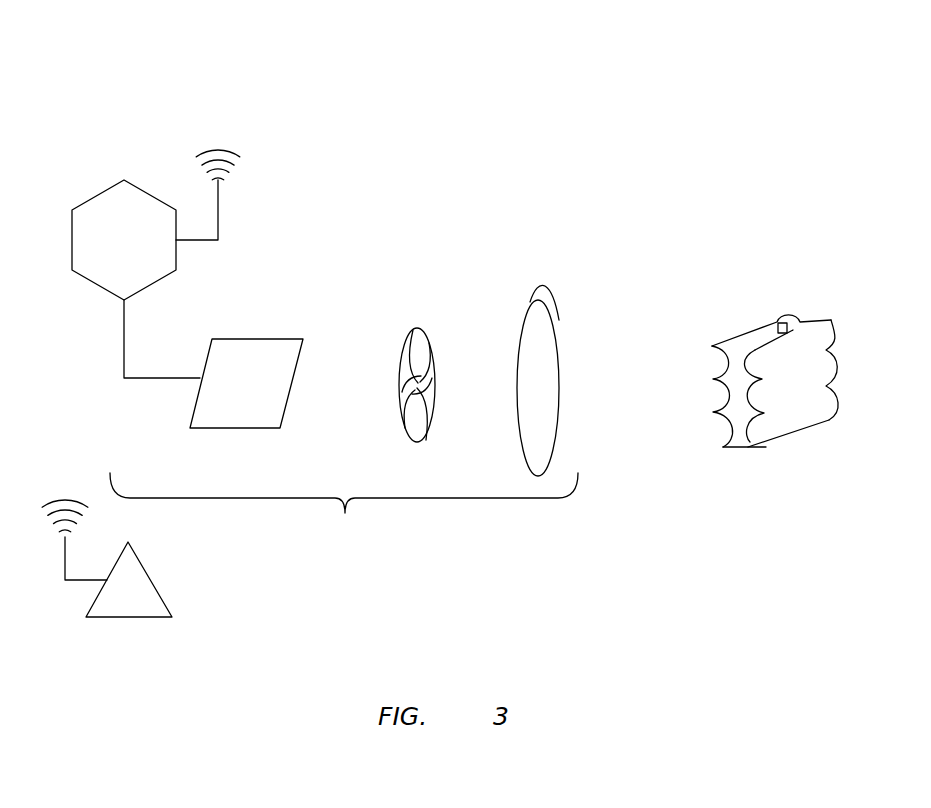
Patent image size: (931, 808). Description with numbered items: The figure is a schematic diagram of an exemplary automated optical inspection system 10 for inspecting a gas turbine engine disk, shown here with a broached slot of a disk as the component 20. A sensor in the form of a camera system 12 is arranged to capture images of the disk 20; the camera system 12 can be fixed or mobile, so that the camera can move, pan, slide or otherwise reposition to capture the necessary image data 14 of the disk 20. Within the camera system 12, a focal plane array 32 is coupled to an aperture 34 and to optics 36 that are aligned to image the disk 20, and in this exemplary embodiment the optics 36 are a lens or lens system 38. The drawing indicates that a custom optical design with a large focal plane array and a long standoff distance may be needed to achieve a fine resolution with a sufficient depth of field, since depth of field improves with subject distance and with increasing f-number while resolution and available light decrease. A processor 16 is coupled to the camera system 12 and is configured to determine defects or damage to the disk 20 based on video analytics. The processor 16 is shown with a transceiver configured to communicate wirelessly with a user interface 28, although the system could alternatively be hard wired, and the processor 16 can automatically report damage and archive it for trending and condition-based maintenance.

The automated optical inspection system 10 is at (135, 88).
The camera system 12 is at (344, 509).
The image data 14 is at (122, 358).
The processor 16 is at (103, 255).
The component 20 is at (772, 280).
The user interface 28 is at (112, 604).
The focal plane array 32 is at (233, 395).
The aperture 34 is at (406, 278).
The optics 36 is at (537, 255).
The lens system 38 is at (557, 332).